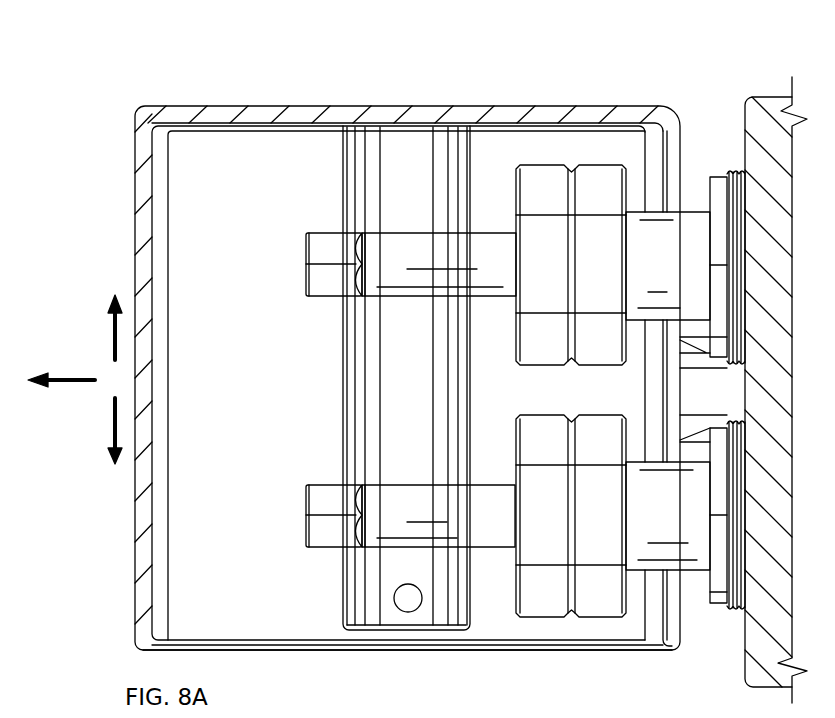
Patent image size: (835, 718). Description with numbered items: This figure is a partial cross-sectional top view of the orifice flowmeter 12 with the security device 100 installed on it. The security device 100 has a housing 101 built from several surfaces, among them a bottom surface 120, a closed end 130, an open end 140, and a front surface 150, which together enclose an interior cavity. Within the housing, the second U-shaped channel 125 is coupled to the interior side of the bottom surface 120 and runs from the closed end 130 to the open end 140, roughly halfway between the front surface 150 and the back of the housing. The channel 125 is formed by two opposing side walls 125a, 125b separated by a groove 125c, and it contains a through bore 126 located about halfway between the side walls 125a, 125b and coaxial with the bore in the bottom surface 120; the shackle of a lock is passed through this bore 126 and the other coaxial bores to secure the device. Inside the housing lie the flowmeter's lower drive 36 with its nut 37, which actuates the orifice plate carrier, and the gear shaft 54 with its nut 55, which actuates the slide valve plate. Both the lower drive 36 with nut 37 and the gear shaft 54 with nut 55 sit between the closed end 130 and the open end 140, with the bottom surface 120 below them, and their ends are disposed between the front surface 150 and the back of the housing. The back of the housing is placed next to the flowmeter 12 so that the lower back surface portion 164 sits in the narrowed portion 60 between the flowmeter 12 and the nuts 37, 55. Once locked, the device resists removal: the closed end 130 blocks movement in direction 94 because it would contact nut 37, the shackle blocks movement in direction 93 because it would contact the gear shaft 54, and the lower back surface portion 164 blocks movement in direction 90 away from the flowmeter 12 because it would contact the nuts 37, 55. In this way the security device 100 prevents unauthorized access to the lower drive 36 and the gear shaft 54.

The security device 100 is at (528, 61).
The flowmeter 12 is at (764, 77).
The lower back surface portion 164 is at (693, 128).
The narrowed portion 60 is at (696, 190).
The bottom surface 120 is at (248, 140).
The closed end 130 is at (340, 104).
The second U-shaped channel 125 is at (426, 403).
The side wall 125a is at (344, 176).
The side wall 125b is at (472, 158).
The groove 125c is at (397, 347).
The lower drive 36 is at (306, 250).
The nut 37 is at (517, 258).
The gear shaft 54 is at (305, 528).
The nut 55 is at (515, 517).
The front surface 150 is at (135, 273).
The direction 93 is at (112, 327).
The direction 90 is at (70, 382).
The direction 94 is at (112, 435).
The open end 140 is at (290, 650).
The through bore 126 is at (414, 607).
The housing 101 is at (526, 665).